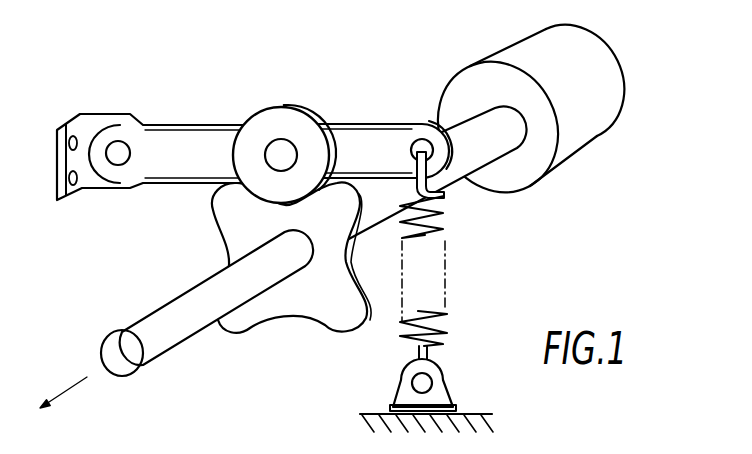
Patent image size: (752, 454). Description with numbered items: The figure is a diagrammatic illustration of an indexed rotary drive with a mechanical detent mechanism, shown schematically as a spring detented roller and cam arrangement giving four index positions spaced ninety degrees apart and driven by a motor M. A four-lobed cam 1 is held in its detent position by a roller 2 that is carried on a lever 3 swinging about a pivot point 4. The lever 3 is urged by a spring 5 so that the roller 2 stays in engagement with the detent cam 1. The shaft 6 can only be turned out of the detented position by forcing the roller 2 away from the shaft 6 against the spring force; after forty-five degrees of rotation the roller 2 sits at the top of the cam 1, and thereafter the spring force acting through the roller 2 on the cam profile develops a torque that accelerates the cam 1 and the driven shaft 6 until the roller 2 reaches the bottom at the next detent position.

The motor M is at (630, 70).
The four-lobed cam 1 is at (232, 232).
The roller 2 is at (283, 117).
The lever 3 is at (377, 140).
The pivot point 4 is at (120, 148).
The spring 5 is at (448, 318).
The shaft 6 is at (175, 327).